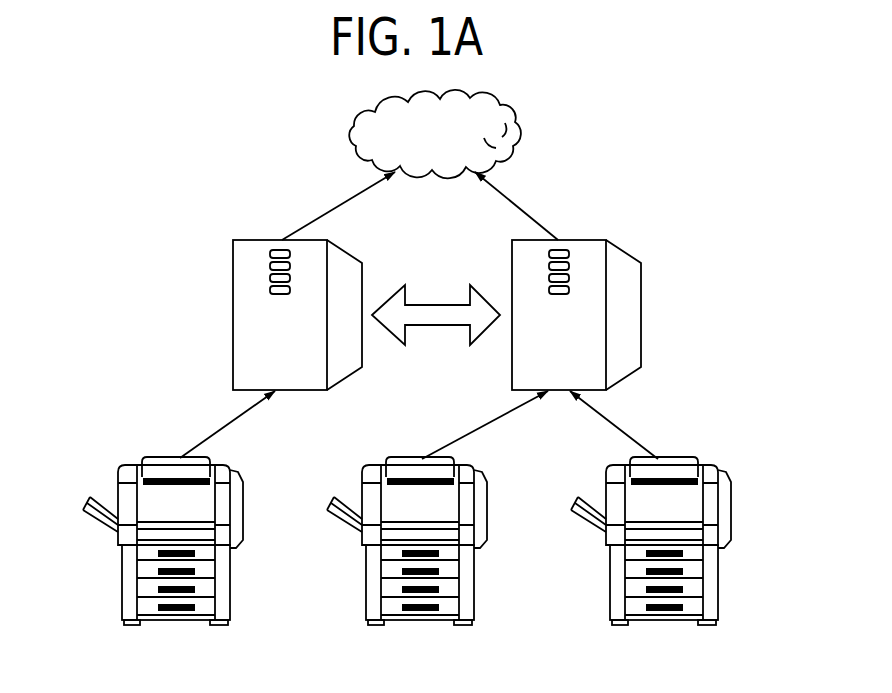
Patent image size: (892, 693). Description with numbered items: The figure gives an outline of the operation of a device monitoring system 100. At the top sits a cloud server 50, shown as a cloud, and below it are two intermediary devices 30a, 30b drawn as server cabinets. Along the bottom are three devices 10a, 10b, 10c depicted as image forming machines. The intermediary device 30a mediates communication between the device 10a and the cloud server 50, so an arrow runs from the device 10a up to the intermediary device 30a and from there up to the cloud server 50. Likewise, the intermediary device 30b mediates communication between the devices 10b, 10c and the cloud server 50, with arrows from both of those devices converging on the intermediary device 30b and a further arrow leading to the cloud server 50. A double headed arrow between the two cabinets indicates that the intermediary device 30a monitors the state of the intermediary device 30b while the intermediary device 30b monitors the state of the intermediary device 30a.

The device monitoring system 100 is at (200, 98).
The cloud server 50 is at (519, 131).
The intermediary device 30a is at (233, 313).
The intermediary device 30b is at (641, 313).
The device 10a is at (230, 578).
The device 10b is at (438, 541).
The device 10c is at (682, 541).